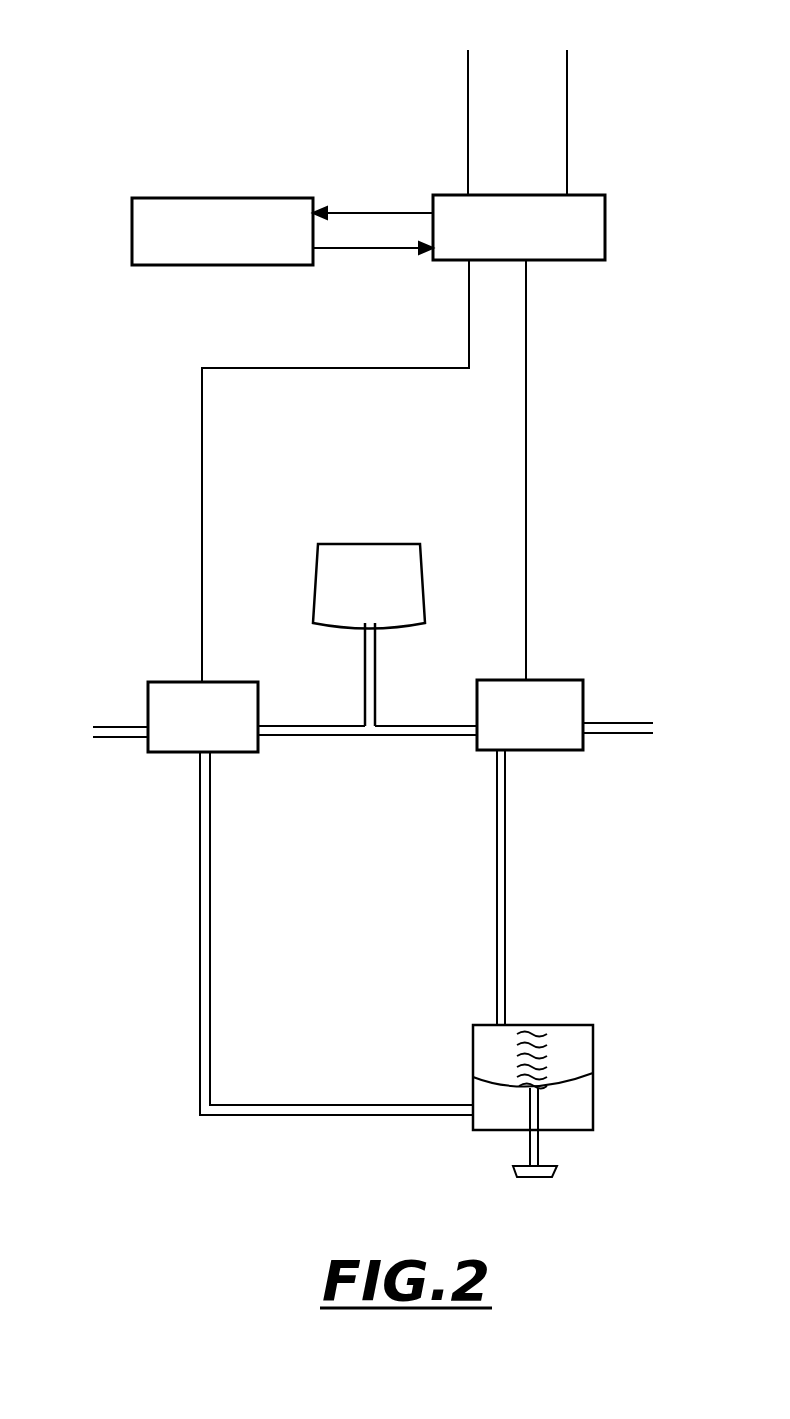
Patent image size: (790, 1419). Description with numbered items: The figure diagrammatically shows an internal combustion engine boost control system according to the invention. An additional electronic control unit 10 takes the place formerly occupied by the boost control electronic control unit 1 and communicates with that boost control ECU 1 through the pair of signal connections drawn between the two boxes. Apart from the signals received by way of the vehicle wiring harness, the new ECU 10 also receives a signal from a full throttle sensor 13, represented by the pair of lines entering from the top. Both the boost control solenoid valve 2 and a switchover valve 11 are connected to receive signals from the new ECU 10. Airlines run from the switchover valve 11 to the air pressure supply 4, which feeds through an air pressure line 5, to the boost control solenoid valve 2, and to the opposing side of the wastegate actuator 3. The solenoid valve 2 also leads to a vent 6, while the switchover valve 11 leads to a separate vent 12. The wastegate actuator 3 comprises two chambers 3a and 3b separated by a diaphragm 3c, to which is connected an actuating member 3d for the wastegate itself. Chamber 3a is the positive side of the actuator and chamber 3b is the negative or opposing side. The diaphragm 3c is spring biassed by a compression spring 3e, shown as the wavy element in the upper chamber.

The boost control electronic control unit 1 is at (222, 231).
The boost control solenoid valve 2 is at (178, 693).
The wastegate actuator 3 is at (527, 1059).
The chamber 3a is at (500, 1117).
The chamber 3b is at (485, 1048).
The diaphragm 3c is at (575, 1080).
The actuating member 3d is at (533, 1147).
The compression spring 3e is at (538, 1032).
The air pressure supply 4 is at (365, 558).
The air pressure line 5 is at (303, 727).
The vent 6 is at (102, 728).
The additional electronic control unit 10 is at (519, 227).
The switchover valve 11 is at (553, 690).
The vent 12 is at (620, 735).
The full throttle sensor 13 is at (487, 63).